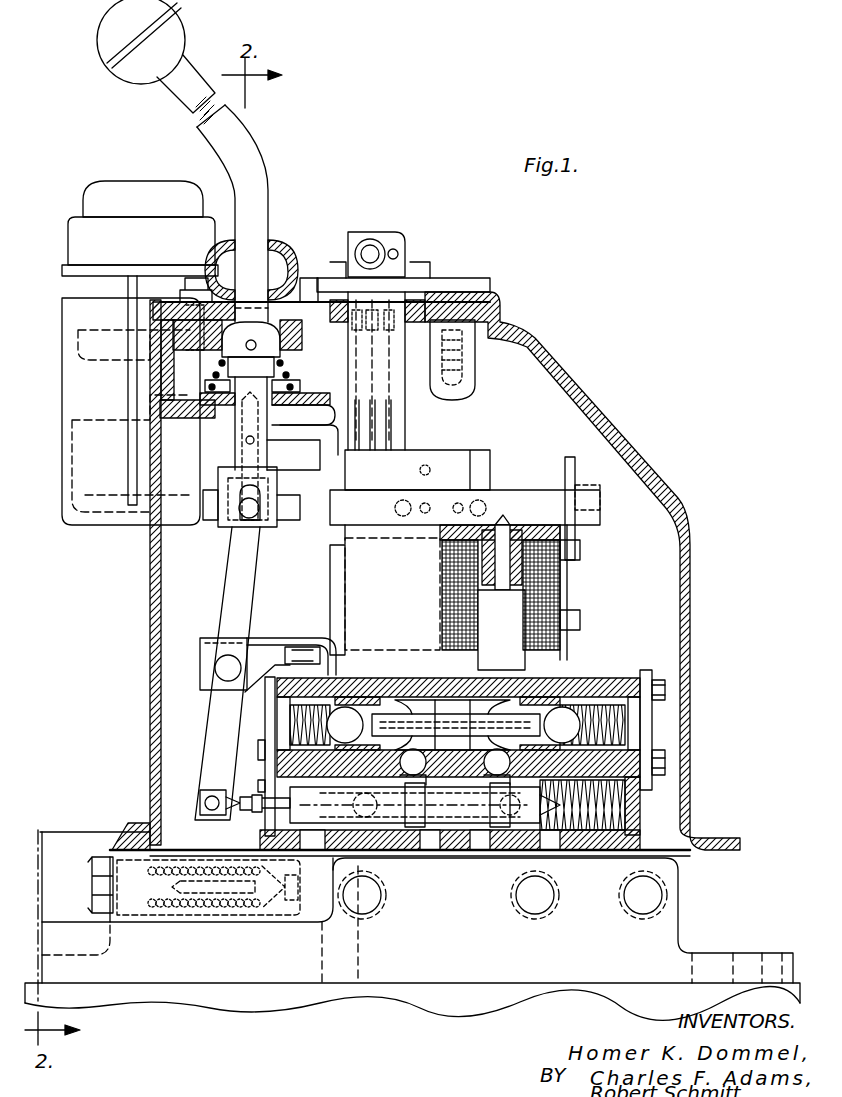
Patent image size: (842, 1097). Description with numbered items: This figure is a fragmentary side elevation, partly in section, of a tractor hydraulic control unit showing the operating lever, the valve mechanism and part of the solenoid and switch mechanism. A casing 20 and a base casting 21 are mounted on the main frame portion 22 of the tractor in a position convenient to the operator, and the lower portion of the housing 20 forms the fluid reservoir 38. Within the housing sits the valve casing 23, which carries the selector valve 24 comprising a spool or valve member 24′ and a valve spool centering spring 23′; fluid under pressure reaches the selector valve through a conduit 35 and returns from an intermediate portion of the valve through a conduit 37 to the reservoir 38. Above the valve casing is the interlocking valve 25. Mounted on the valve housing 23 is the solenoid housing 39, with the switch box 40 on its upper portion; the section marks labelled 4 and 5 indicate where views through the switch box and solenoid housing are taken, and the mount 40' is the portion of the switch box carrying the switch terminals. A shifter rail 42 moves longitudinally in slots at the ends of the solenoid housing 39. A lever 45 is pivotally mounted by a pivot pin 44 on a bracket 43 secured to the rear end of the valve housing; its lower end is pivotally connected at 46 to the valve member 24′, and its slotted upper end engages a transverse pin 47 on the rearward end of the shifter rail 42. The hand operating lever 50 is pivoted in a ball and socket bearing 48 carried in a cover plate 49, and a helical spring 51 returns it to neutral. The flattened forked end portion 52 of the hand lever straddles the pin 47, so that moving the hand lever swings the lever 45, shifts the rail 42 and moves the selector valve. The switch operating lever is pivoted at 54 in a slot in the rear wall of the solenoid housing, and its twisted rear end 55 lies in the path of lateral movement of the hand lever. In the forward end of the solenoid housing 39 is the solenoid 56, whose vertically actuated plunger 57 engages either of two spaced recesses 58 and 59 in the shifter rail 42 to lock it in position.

The section line 4- 4 is at (493, 440).
The section line 5- 5 is at (552, 506).
The casing 20 is at (690, 650).
The base casting 21 is at (725, 892).
The main frame portion 22 is at (393, 998).
The valve casing 23 is at (665, 762).
The valve spool centering spring 23′ is at (640, 800).
The selector valve 24 is at (458, 850).
The valve member 24′ is at (455, 832).
The interlocking valve 25 is at (457, 700).
The conduit 35 is at (380, 856).
The conduit 37 is at (465, 838).
The fluid reservoir 38 is at (655, 820).
The solenoid housing 39 is at (344, 595).
The switch box 40 is at (465, 408).
The solenoid mount 40' is at (403, 336).
The shifter rail 42 is at (212, 508).
The bracket 43 is at (200, 638).
The pivot pin 44 is at (225, 665).
The lever 45 is at (230, 570).
The pivotal connection 46 is at (212, 795).
The transverse pin 47 is at (265, 520).
The ball and socket bearing 48 is at (228, 354).
The cover plate 49 is at (292, 262).
The hand operating lever 50 is at (262, 192).
The helical spring 51 is at (282, 388).
The forked end portion 52 is at (222, 472).
The pivot 54 is at (300, 404).
The twisted or inclined rear end 55 is at (286, 462).
The solenoid 56 is at (583, 590).
The plunger 57 is at (455, 563).
The recess 58 is at (490, 515).
The recess 59 is at (532, 525).